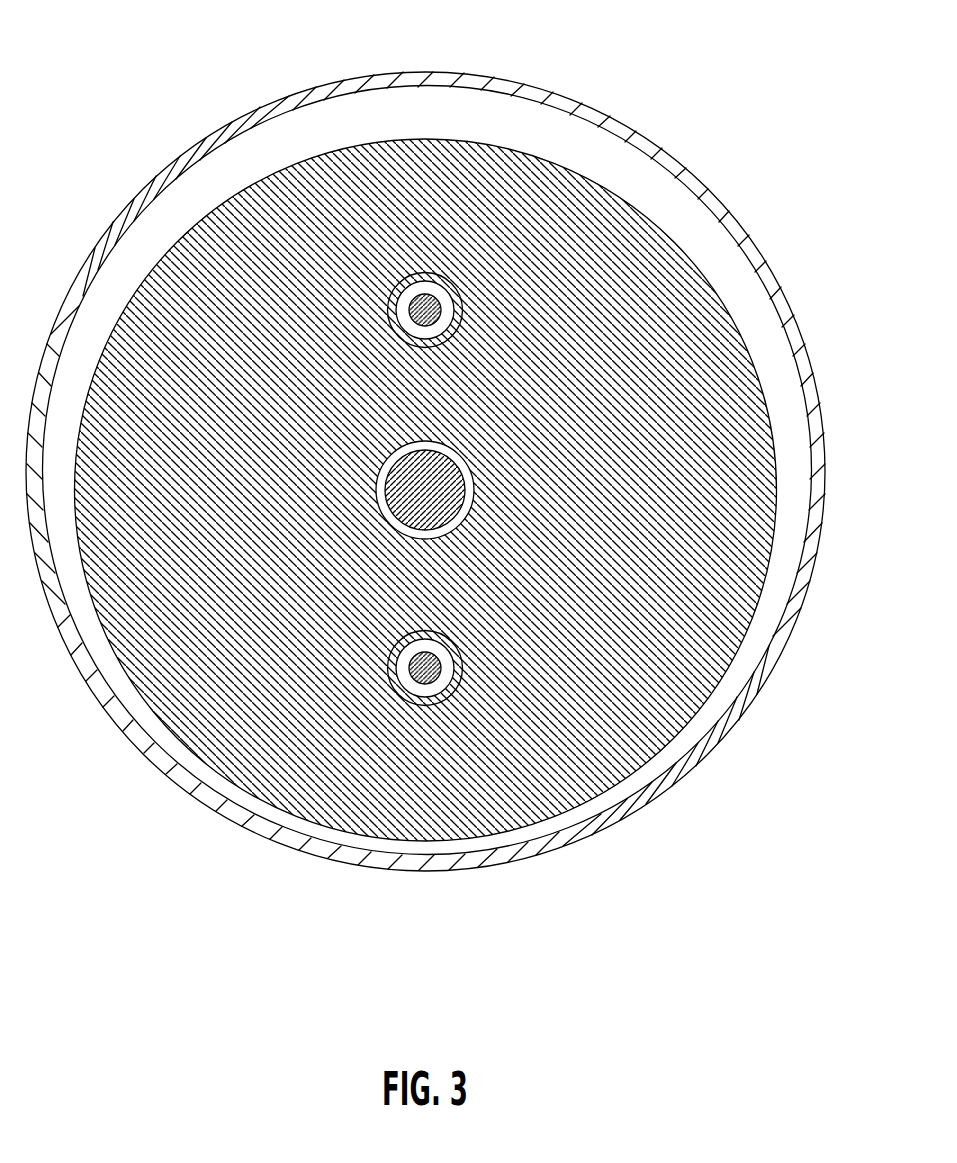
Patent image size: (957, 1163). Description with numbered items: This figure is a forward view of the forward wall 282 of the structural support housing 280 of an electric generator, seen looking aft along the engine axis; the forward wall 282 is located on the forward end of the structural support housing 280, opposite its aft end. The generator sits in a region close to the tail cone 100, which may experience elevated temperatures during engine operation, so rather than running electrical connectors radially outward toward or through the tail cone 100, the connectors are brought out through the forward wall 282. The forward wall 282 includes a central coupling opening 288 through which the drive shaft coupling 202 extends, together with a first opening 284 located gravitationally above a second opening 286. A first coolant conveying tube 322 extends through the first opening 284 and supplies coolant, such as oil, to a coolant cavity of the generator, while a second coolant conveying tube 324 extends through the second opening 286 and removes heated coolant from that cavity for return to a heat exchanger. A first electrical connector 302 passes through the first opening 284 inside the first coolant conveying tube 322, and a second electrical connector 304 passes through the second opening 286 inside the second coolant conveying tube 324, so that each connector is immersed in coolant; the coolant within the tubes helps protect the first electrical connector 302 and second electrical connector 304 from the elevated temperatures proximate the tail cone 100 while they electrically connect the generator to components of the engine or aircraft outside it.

The tail cone 100 is at (821, 498).
The structural support housing 280 is at (732, 657).
The forward wall 282 is at (647, 458).
The drive shaft coupling 202 is at (443, 502).
The coupling opening 288 is at (458, 523).
The first electrical connector 302 is at (391, 296).
The second electrical connector 304 is at (417, 686).
The first opening 284 is at (463, 308).
The second opening 286 is at (432, 706).
The first coolant conveying tube 322 is at (426, 282).
The second coolant conveying tube 324 is at (456, 669).